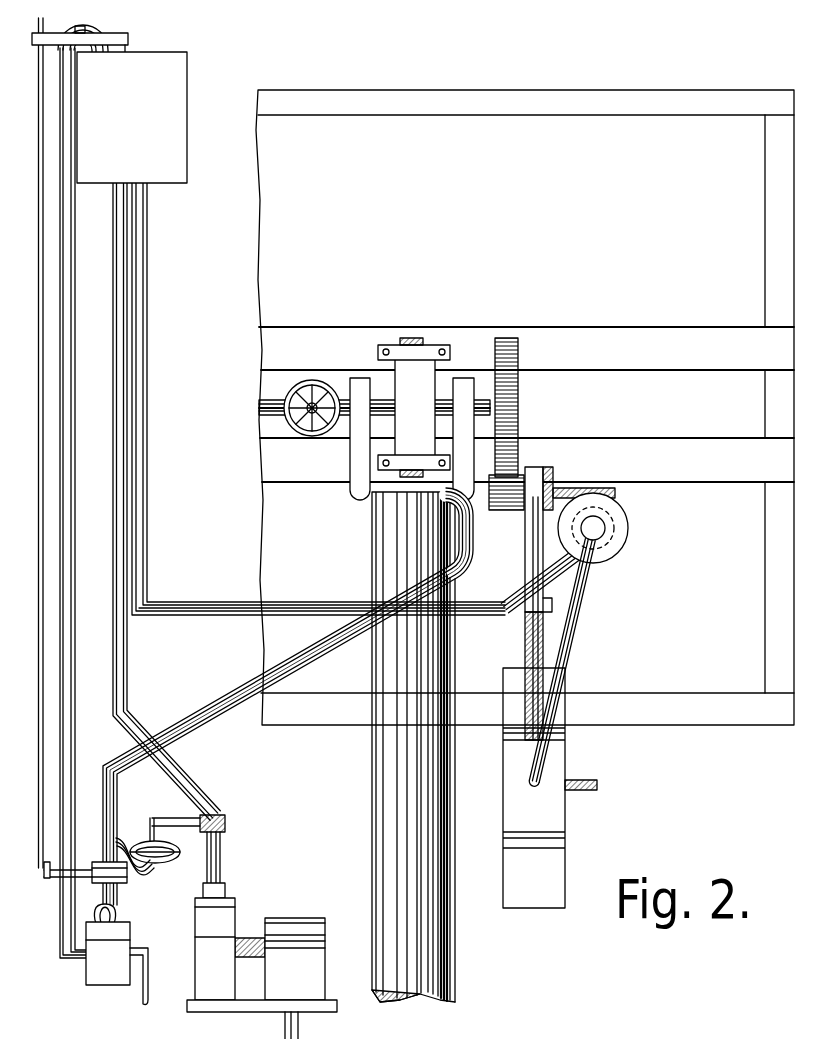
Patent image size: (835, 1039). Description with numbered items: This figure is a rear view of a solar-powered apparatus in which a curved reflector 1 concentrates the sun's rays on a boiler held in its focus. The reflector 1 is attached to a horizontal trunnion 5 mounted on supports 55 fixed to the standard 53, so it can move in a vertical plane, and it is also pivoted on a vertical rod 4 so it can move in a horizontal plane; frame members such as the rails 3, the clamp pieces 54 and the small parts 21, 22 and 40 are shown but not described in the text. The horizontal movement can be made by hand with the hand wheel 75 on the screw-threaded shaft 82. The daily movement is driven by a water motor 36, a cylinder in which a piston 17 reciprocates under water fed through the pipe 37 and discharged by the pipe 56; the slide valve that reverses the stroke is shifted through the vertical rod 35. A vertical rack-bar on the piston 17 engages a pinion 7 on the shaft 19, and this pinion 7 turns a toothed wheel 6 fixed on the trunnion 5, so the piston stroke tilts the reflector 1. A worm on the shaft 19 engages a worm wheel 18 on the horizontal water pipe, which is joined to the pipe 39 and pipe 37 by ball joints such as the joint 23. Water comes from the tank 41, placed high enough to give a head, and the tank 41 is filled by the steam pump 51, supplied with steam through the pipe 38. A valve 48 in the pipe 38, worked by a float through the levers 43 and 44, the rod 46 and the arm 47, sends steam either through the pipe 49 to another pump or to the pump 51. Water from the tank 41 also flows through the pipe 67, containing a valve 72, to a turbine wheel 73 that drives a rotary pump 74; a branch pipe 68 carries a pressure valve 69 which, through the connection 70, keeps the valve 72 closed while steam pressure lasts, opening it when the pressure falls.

The curved reflector 1 is at (525, 407).
The guide rails 3 is at (526, 346).
The vertical rod 4 is at (418, 343).
The horizontal trunnion 5 is at (383, 393).
The toothed wheel 6 is at (512, 397).
The pinion 7 is at (510, 497).
The piston and rack-bar 17 is at (526, 565).
The worm wheel 18 is at (628, 528).
The shaft 19 is at (615, 493).
The nut 21 is at (553, 472).
The bracket 22 is at (552, 608).
The ball joint 23 is at (600, 536).
The vertical rod 35 is at (535, 598).
The water motor 36 is at (534, 788).
The pipe 37 is at (583, 628).
The steam pipe 38 is at (288, 696).
The pipe 39 is at (318, 399).
The tube 40 is at (72, 377).
The tank 41 is at (132, 117).
The lever 43 is at (128, 50).
The lever 44 is at (108, 40).
The rod 46 is at (25, 443).
The arm 47 is at (44, 873).
The valve 48 is at (125, 880).
The pipe 49 is at (95, 909).
The steam pump 51 is at (117, 963).
The standard 53 is at (392, 747).
The clamp plates 54 is at (397, 345).
The supports 55 is at (362, 378).
The discharge pipe 56 is at (597, 783).
The pipe 67 is at (116, 446).
The branch pipe 68 is at (146, 870).
The pressure valve 69 is at (172, 856).
The connection 70 is at (163, 834).
The valve 72 is at (225, 822).
The turbine wheel 73 is at (215, 916).
The rotary pump 74 is at (295, 959).
The hand wheel 75 is at (291, 426).
The shaft 82 is at (298, 398).